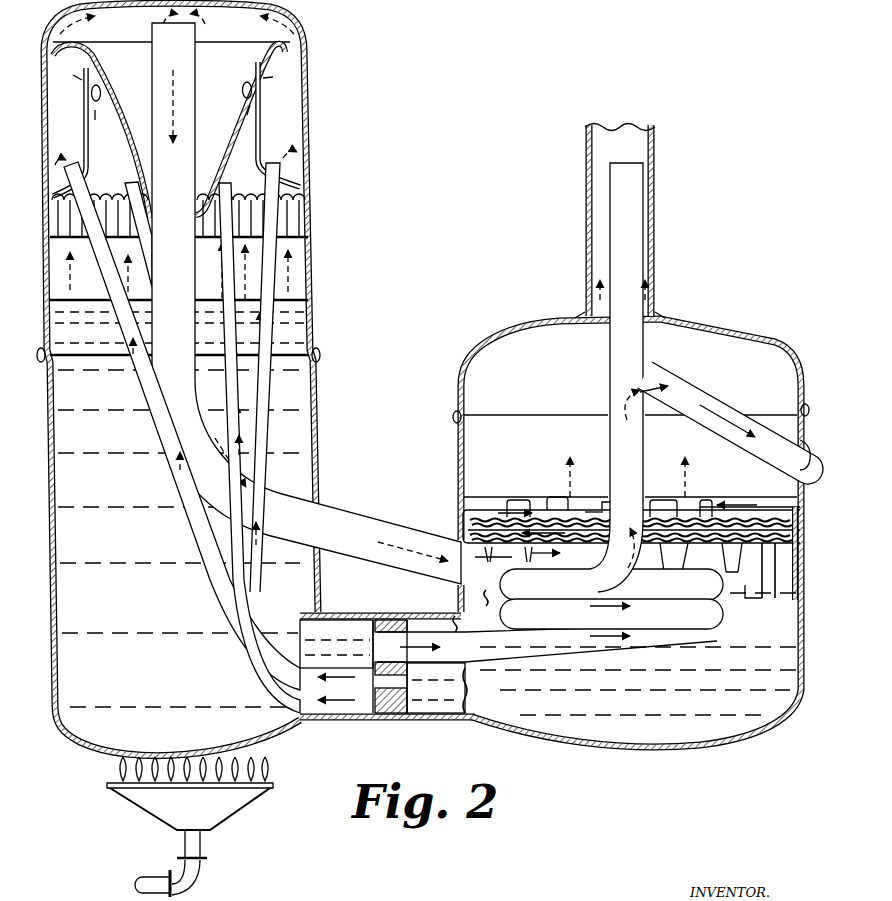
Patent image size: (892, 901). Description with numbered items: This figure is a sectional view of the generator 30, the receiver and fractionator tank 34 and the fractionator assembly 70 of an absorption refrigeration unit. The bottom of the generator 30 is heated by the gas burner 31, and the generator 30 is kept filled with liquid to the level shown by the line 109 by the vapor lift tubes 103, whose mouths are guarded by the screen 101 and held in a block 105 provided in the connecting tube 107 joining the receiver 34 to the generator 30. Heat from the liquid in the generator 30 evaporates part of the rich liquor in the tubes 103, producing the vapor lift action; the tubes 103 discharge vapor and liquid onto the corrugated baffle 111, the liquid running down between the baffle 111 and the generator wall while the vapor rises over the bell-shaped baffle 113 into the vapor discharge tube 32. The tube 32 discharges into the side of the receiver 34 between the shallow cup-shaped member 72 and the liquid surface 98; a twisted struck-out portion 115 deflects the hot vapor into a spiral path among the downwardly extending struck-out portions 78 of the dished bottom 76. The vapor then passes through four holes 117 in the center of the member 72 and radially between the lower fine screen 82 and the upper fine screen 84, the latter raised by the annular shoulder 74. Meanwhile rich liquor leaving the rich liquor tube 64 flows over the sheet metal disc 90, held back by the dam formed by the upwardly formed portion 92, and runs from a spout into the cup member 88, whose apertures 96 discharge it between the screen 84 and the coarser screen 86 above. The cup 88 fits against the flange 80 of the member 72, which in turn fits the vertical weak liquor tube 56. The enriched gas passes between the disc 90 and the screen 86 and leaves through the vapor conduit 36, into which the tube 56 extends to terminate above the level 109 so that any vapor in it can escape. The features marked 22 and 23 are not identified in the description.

The cleaning liquid level 22 is at (470, 484).
The liquid 23 is at (462, 605).
The generator 30 is at (346, 286).
The gas burner 31 is at (163, 807).
The vapor discharge tube 32 is at (371, 504).
The receiver tank 34 is at (559, 319).
The vapor conduit 36 is at (653, 192).
The weak liquor tube 56 is at (700, 400).
The rich liquor tube 64 is at (797, 436).
The fractionator assembly 70 is at (546, 509).
The shallow cup-shaped member 72 is at (483, 509).
The annular shoulder 74 is at (789, 553).
The dished bottom 76 is at (715, 545).
The struck-out portions 78 is at (749, 590).
The flange 80 is at (651, 509).
The fine screen 82 is at (684, 547).
The fine screen 84 is at (506, 509).
The coarser screen 86 is at (574, 509).
The cup member 88 is at (594, 509).
The sheet metal disc 90 is at (710, 500).
The upwardly formed portion 92 is at (735, 488).
The apertures 96 is at (588, 512).
The liquid level line 98 is at (740, 566).
The screen 101 is at (473, 710).
The vapor lift tubes 103 is at (280, 676).
The block 105 is at (400, 709).
The connecting tube 107 is at (357, 721).
The liquid level line 109 is at (95, 295).
The baffle 111 is at (261, 123).
The bell-shaped baffle 113 is at (230, 43).
The struck-out portion 115 is at (476, 611).
The holes 117 is at (604, 562).